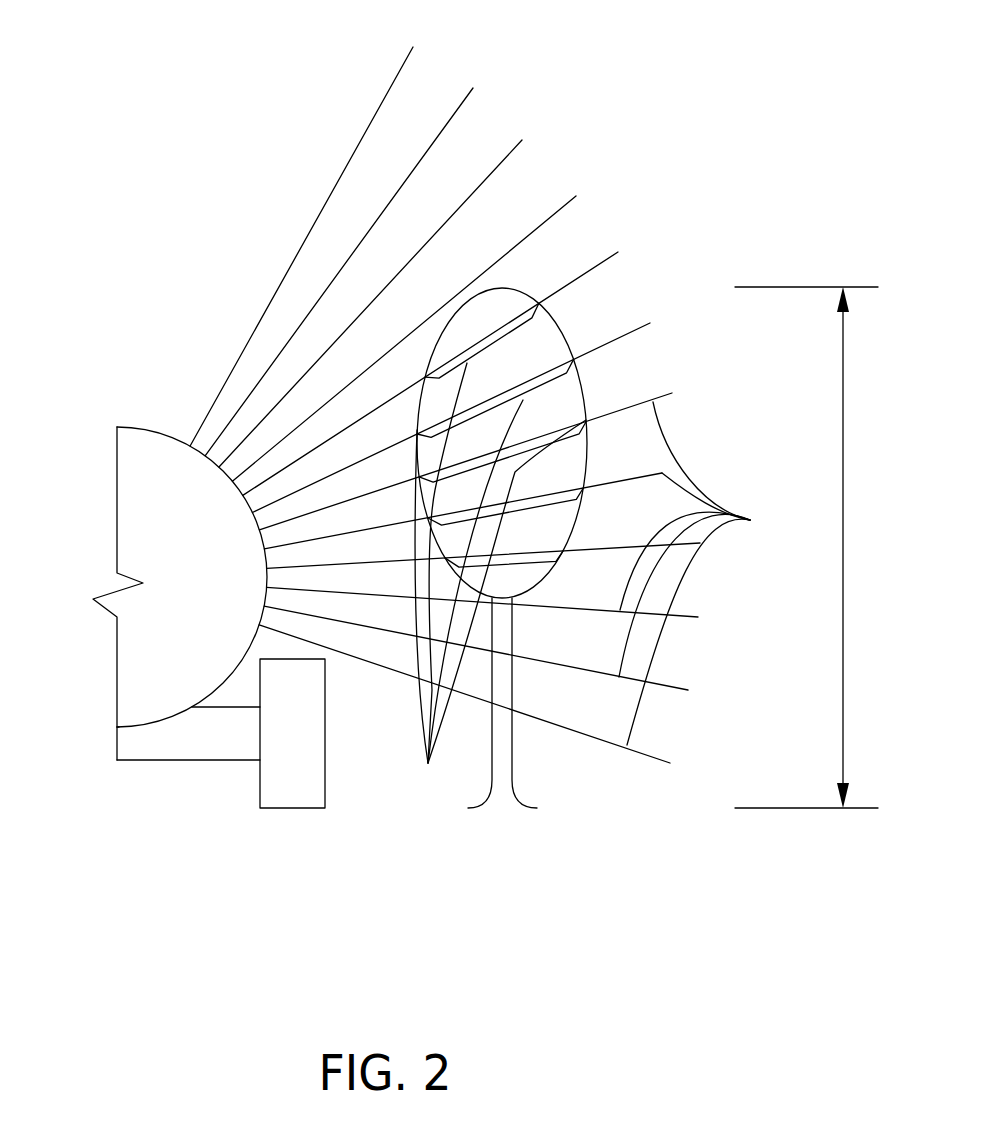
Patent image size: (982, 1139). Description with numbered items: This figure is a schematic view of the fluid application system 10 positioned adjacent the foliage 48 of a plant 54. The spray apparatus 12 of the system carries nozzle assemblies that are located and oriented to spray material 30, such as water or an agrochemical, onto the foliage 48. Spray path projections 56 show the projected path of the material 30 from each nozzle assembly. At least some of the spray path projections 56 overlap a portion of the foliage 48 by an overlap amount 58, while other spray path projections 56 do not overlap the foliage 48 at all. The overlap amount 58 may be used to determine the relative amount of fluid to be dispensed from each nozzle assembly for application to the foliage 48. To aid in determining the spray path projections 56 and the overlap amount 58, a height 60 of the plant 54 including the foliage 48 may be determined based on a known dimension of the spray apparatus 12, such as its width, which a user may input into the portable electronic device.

The fluid application system 10 is at (173, 564).
The spray apparatus 12 is at (160, 723).
The material 30 is at (297, 102).
The foliage 48 is at (558, 325).
The plant 54 is at (507, 190).
The spray path projections 56 is at (705, 573).
The overlap amount 58 is at (499, 584).
The height 60 is at (843, 475).